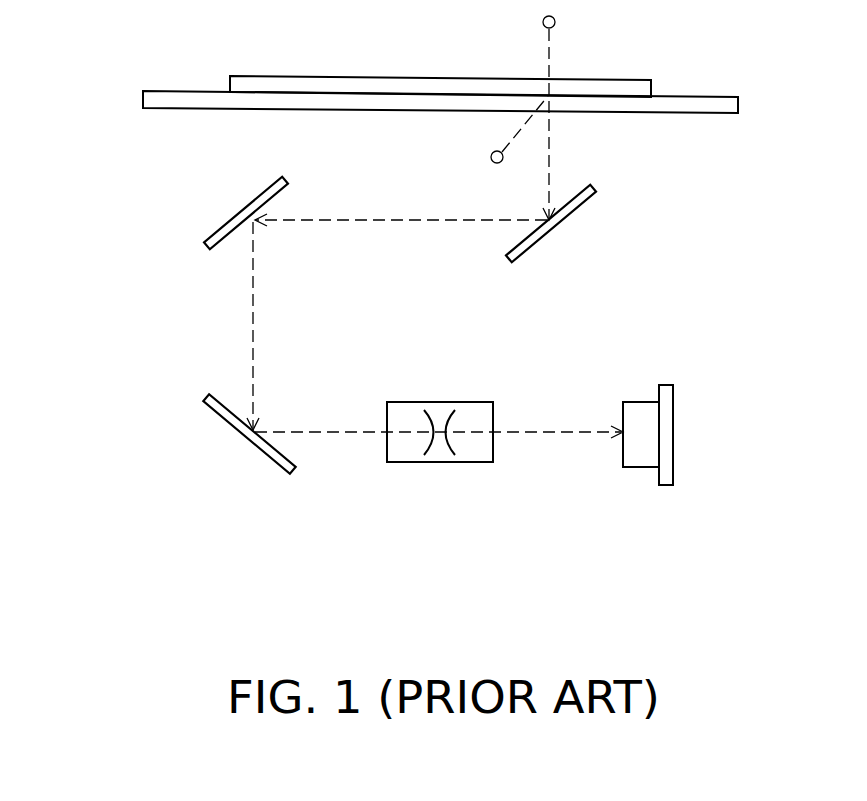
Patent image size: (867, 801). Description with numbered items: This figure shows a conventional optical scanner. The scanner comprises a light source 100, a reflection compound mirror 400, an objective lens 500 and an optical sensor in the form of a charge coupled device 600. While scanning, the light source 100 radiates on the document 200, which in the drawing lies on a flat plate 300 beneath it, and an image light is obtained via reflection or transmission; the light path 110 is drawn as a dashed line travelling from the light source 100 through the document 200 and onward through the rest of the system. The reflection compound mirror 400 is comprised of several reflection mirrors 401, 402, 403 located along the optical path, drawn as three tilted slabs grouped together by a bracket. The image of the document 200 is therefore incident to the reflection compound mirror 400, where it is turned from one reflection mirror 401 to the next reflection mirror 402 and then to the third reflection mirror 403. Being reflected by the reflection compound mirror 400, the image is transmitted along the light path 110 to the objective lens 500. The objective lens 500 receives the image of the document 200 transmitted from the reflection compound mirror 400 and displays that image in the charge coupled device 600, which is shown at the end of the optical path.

The light source 100 is at (542, 22).
The light beam 110 is at (552, 143).
The document 200 is at (632, 81).
The stage / plate 300 is at (740, 103).
The reflection compound mirror 400 is at (308, 325).
The reflection mirror 401 is at (510, 258).
The reflection mirror 402 is at (222, 232).
The reflection mirror 403 is at (200, 434).
The objective lens 500 is at (436, 463).
The charge coupled device 600 is at (642, 468).